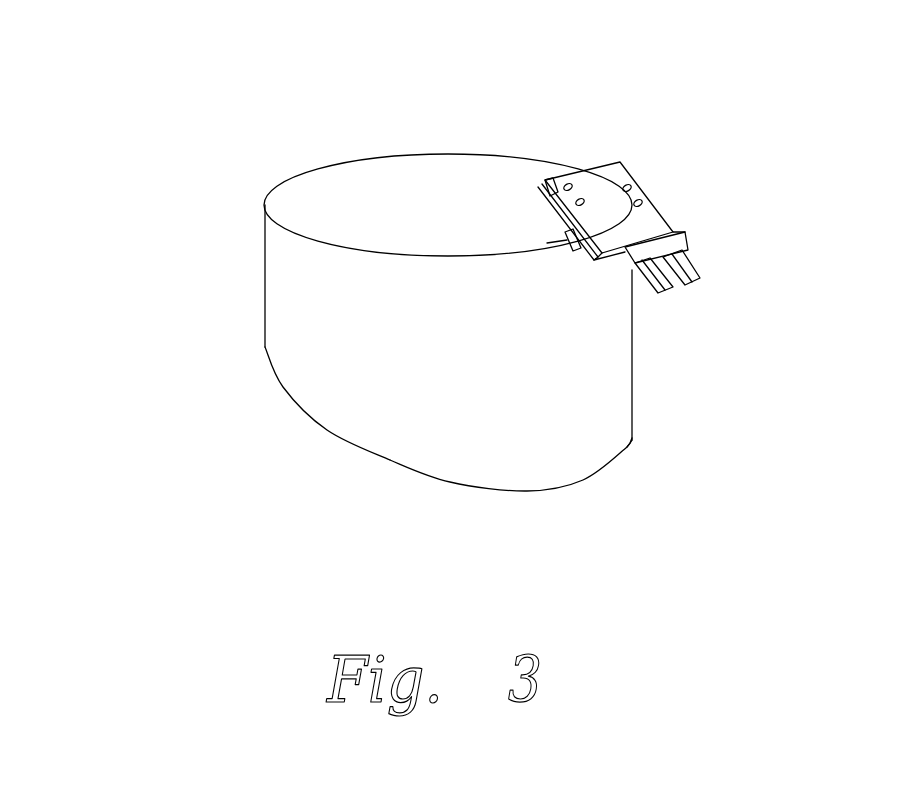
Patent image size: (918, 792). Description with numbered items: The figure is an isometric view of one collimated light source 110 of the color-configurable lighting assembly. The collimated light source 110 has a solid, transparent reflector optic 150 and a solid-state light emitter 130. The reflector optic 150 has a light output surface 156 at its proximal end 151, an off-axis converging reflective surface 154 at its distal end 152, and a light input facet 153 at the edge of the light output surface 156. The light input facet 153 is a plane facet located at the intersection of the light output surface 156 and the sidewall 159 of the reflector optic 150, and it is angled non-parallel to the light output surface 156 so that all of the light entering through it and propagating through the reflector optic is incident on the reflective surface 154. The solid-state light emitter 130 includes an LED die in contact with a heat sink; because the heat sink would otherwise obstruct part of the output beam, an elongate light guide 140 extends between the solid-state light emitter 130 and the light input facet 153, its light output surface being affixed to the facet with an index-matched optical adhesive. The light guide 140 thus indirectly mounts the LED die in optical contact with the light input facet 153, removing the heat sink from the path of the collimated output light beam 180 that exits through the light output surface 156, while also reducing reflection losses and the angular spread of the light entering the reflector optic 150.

The collimated light source 110 is at (240, 413).
The solid-state light emitter 130 is at (672, 186).
The elongate light guide 140 is at (545, 192).
The reflector optic 150 is at (310, 272).
The proximal end 151 is at (265, 225).
The distal end 152 is at (633, 438).
The light input facet 153 is at (540, 243).
The off-axis converging reflective surface 154 is at (325, 428).
The light output surface 156 is at (407, 203).
The sidewall 159 is at (495, 438).
The collimated output light beam 180 is at (632, 410).